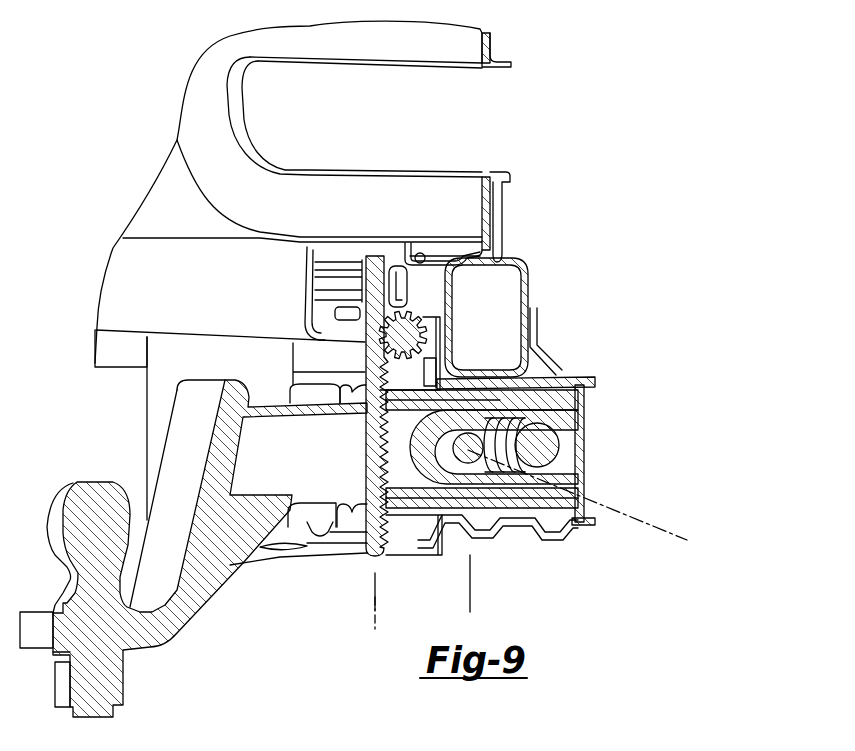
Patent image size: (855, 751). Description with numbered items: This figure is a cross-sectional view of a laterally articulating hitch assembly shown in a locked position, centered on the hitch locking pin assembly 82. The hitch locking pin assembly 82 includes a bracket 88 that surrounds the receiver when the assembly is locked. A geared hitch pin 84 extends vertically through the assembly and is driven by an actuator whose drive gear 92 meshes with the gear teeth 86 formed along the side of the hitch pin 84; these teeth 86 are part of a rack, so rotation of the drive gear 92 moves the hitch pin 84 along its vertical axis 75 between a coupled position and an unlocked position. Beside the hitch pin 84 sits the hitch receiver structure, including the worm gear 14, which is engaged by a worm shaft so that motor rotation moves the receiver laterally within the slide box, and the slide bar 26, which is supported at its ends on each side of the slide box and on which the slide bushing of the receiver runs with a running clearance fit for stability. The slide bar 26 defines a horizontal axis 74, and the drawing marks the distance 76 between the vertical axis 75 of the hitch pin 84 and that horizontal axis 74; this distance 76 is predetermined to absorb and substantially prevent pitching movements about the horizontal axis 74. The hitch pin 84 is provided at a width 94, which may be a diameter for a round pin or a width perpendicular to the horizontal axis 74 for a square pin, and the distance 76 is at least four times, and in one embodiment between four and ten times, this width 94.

The hitch locking pin assembly 82 is at (390, 232).
The bracket 88 is at (423, 253).
The drive gear 92 is at (407, 333).
The gear teeth 86 is at (387, 423).
The slide bar 26 is at (502, 409).
The worm gear 14 is at (560, 452).
The horizontal axis 74 is at (665, 512).
The hitch pin 84 is at (375, 450).
The width 94 is at (415, 547).
The distance 76 is at (469, 590).
The vertical axis 75 is at (372, 619).